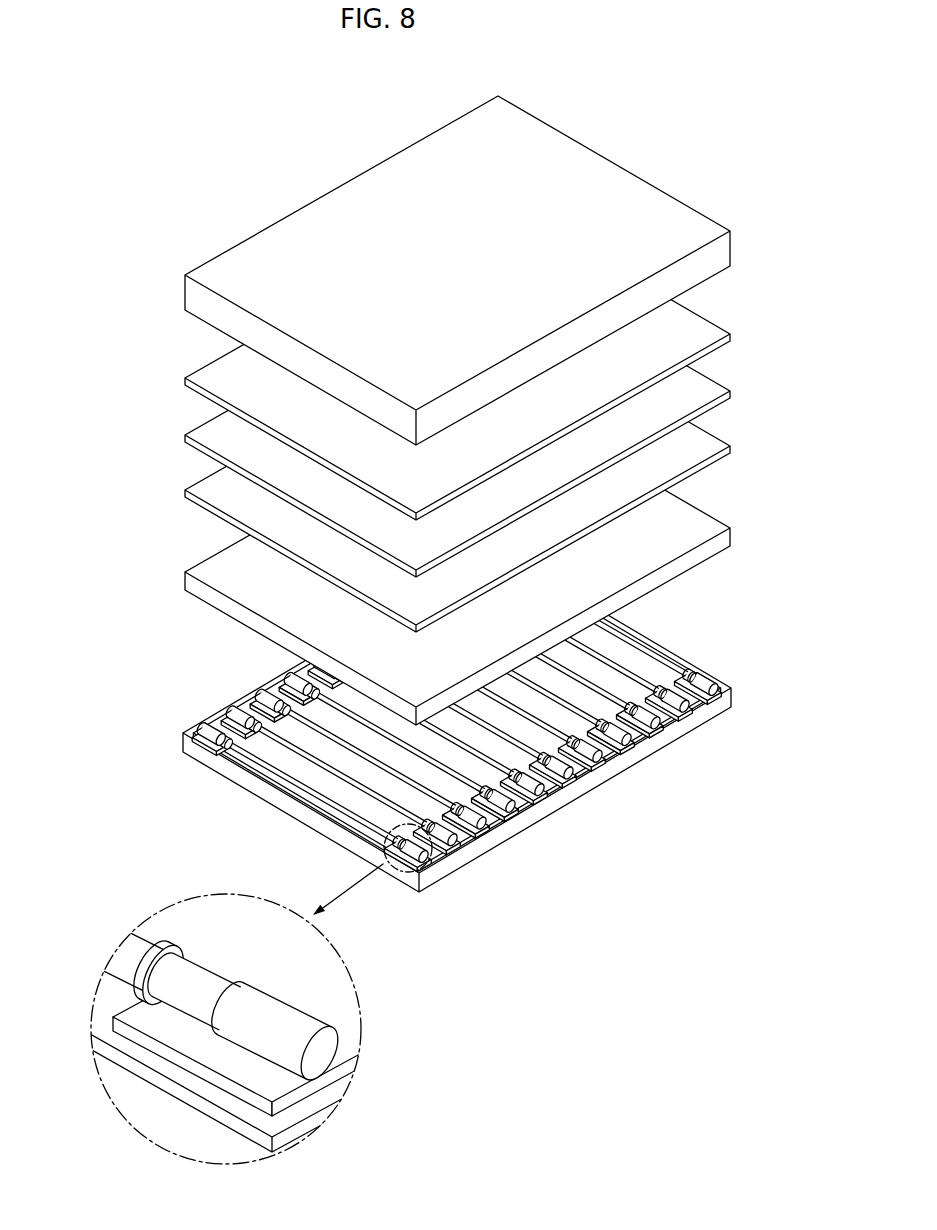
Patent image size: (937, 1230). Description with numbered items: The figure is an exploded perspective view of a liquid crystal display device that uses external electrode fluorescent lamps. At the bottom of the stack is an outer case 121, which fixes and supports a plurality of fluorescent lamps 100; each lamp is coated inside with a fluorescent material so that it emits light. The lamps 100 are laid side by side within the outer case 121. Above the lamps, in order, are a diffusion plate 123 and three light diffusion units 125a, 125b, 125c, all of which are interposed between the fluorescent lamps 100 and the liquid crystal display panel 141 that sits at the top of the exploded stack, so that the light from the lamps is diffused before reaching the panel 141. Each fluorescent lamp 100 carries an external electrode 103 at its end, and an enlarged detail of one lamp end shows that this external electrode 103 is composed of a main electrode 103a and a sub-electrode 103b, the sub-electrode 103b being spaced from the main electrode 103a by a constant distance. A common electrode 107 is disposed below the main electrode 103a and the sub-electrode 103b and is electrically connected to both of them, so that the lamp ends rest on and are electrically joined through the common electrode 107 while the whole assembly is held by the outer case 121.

The liquid crystal display panel 141 is at (723, 248).
The light diffusion unit 125c is at (724, 336).
The light diffusion unit 125b is at (724, 392).
The light diffusion unit 125a is at (724, 449).
The diffusion plate 123 is at (724, 541).
The outer case 121 is at (727, 698).
The fluorescent lamp 100 is at (662, 656).
The external electrode 103 is at (822, 597).
The main electrode 103a is at (712, 680).
The sub-electrode 103b is at (693, 671).
The common electrode 107 is at (680, 714).